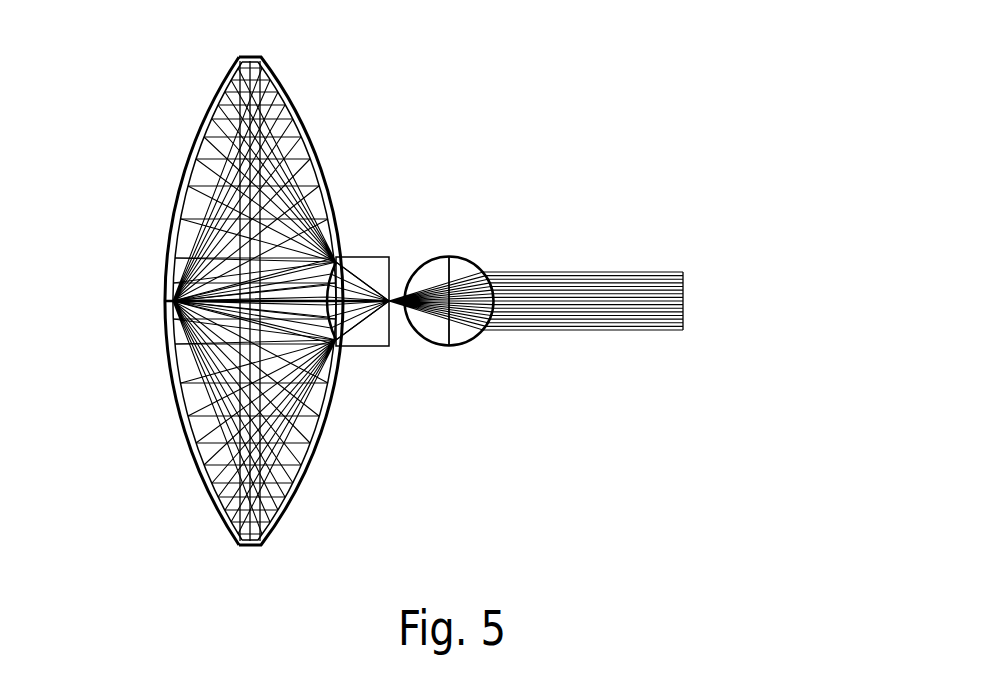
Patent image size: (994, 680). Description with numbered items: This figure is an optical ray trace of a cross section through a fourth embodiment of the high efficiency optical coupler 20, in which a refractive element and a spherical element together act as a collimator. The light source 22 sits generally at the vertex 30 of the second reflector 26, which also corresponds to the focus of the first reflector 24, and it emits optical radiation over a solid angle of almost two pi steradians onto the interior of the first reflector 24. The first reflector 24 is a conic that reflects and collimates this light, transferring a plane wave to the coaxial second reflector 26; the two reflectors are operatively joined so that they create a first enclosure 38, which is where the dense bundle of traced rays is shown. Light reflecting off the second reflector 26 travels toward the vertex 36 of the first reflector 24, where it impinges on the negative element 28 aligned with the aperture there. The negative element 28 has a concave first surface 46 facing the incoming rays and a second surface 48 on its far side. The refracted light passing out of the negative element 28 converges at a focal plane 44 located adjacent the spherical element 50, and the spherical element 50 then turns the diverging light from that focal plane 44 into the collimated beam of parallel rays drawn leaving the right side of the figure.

The high efficiency optical coupler 20 is at (538, 74).
The light source 22 is at (173, 302).
The first reflector 24 is at (313, 142).
The second reflector 26 is at (213, 95).
The negative element 28 is at (360, 257).
The vertex of the second reflector 30 is at (173, 303).
The vertex of the first reflector 36 is at (332, 322).
The first enclosure 38 is at (268, 110).
The focal plane 44 is at (391, 305).
The concave first surface 46 is at (336, 264).
The second surface 48 is at (393, 268).
The spherical element 50 is at (475, 337).